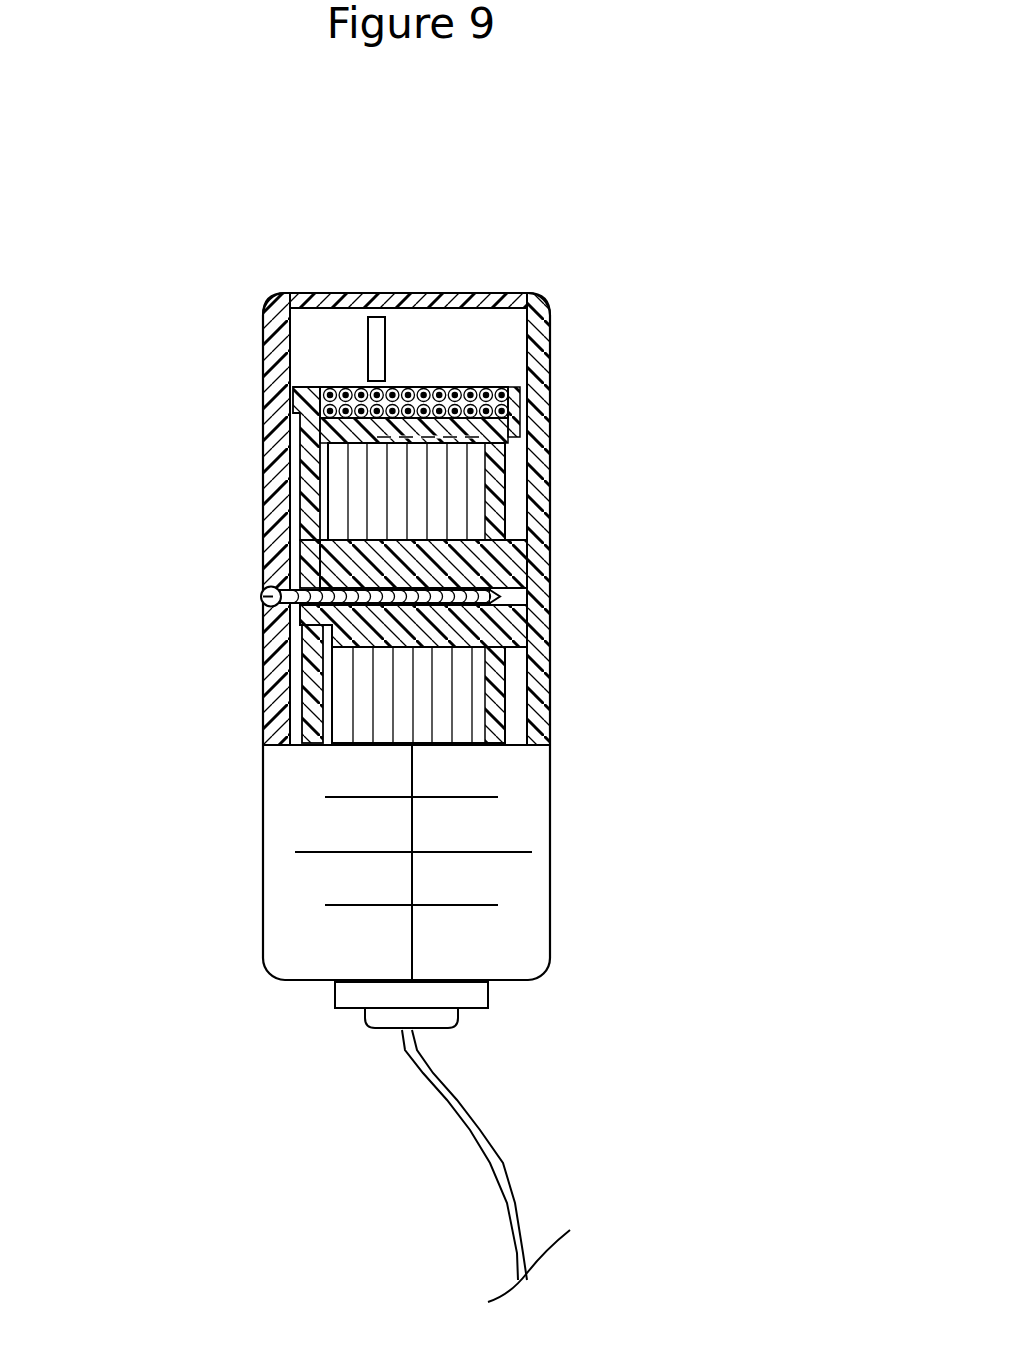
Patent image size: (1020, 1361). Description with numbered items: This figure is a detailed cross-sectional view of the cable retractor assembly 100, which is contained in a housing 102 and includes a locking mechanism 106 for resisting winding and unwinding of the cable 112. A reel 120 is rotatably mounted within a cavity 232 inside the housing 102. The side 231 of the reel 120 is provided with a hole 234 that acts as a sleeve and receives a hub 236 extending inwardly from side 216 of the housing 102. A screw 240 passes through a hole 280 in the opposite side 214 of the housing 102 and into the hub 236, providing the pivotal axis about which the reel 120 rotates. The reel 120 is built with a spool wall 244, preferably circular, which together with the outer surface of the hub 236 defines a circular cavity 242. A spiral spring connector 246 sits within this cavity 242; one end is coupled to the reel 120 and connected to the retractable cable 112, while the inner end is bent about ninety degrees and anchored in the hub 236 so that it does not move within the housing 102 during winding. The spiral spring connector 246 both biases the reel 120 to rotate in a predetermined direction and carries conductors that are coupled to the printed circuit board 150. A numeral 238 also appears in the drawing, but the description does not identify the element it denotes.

The cable retractor assembly 100 is at (229, 881).
The housing 102 is at (285, 288).
The locking mechanism 106 is at (493, 997).
The cable 112 is at (355, 379).
The reel 120 is at (299, 480).
The printed circuit board 150 is at (390, 332).
The side of housing 214 is at (267, 420).
The side of housing 216 is at (539, 352).
The side of reel 231 is at (304, 704).
The cavity 232 is at (464, 337).
The hole 234 is at (301, 569).
The hub 236 is at (409, 572).
The screw 238 is at (290, 577).
The screw 240 is at (506, 646).
The circular cavity 242 is at (516, 495).
The spool wall 244 is at (317, 409).
The spiral spring connector 246 is at (376, 452).
The hole 280 is at (267, 615).